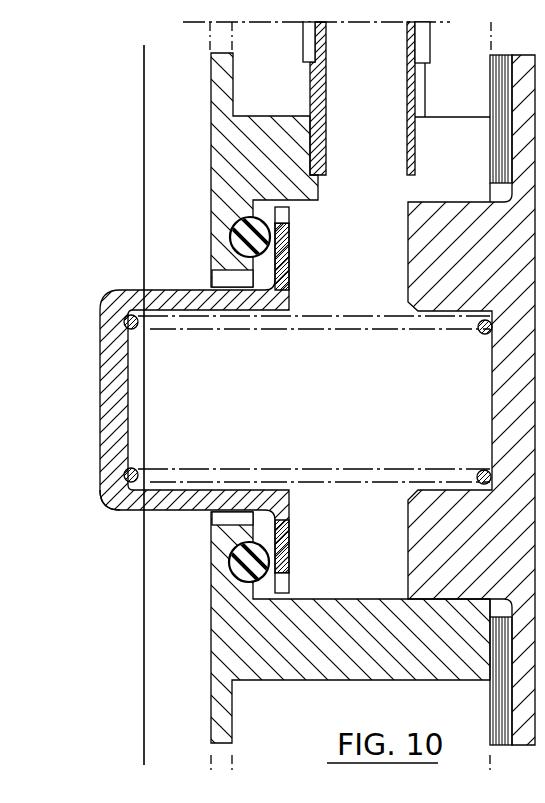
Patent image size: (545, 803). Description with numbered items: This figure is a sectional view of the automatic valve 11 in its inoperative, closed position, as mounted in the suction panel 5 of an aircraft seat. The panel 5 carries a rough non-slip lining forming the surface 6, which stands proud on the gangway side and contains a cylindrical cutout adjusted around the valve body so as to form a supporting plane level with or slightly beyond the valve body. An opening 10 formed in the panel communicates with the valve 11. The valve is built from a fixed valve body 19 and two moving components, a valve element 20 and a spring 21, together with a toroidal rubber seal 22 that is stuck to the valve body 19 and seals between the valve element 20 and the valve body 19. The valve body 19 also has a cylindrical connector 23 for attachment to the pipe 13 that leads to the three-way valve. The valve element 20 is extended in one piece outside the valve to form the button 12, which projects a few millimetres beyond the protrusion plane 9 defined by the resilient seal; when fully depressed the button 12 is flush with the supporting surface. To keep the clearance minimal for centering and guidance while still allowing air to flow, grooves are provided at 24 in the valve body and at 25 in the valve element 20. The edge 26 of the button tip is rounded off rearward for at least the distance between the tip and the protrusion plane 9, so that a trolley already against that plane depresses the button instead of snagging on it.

The suction panel 5 is at (470, 40).
The surface 6 is at (232, 758).
The plane of protrusion 9 is at (144, 211).
The opening 10 is at (152, 277).
The valve 11 is at (208, 123).
The button 12 is at (108, 319).
The pipe 13 is at (420, 48).
The valve body 19 is at (216, 707).
The valve element 20 is at (289, 256).
The spring 21 is at (327, 324).
The toroidal rubber seal 22 is at (230, 239).
The cylindrical connector 23 is at (415, 95).
The grooves in the valve body 24 is at (223, 518).
The grooves in the valve element 25 is at (289, 215).
The edge of the tip of the button 26 is at (130, 503).